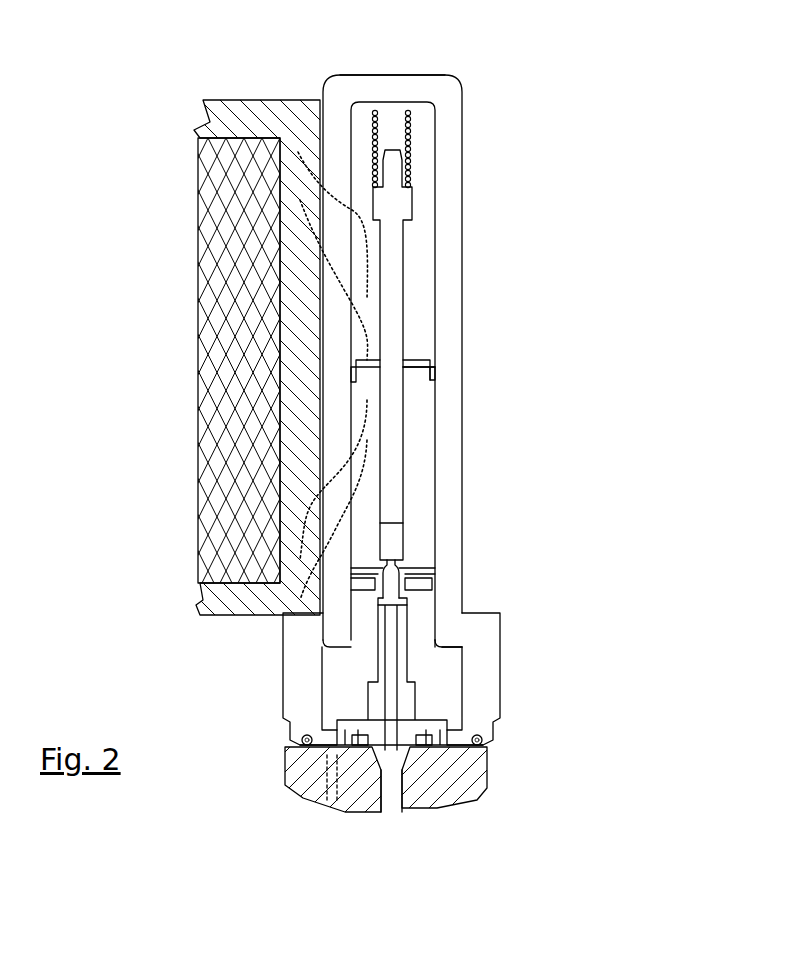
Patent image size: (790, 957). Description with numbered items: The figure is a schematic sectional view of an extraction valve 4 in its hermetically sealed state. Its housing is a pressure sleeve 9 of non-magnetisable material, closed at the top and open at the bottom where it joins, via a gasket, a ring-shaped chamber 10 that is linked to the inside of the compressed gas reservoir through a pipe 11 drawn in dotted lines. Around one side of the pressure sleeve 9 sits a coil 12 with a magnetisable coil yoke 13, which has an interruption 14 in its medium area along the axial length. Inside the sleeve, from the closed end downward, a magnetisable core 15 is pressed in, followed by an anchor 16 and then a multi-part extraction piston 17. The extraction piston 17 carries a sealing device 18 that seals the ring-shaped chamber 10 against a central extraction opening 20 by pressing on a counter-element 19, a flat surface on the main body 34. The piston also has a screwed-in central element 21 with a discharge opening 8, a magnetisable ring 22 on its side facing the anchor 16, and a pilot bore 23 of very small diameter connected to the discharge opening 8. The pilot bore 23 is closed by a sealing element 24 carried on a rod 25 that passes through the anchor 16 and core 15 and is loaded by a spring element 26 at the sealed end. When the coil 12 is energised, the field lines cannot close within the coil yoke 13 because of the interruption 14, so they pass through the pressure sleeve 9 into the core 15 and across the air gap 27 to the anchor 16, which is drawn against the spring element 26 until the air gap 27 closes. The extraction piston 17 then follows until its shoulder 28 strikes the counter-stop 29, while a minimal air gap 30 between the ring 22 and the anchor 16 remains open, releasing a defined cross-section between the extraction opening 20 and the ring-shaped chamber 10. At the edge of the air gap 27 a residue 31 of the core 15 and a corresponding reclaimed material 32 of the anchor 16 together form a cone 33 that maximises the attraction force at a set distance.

The extraction valve 4 is at (537, 128).
The discharge opening 8 is at (388, 672).
The pressure sleeve 9 is at (340, 90).
The ring-shaped chamber 10 is at (328, 743).
The pipe 11 is at (355, 752).
The coil 12 is at (228, 202).
The coil yoke 13 is at (220, 132).
The interruption 14 is at (303, 362).
The core 15 is at (446, 323).
The anchor 16 is at (423, 445).
The extraction piston 17 is at (454, 640).
The sealing device 18 is at (352, 728).
The counter-element 19 is at (368, 730).
The extraction opening 20 is at (392, 792).
The central element 21 is at (407, 692).
The ring 22 is at (365, 588).
The pilot bore 23 is at (400, 555).
The sealing element 24 is at (388, 540).
The rod 25 is at (324, 355).
The spring element 26 is at (410, 120).
The air gap 27 is at (412, 367).
The shoulder 28 is at (460, 637).
The counter-stop 29 is at (450, 637).
The air gap 30 is at (417, 573).
The residue 31 is at (435, 371).
The reclaimed material 32 is at (432, 378).
The cone 33 is at (582, 313).
The main body 34 is at (393, 809).